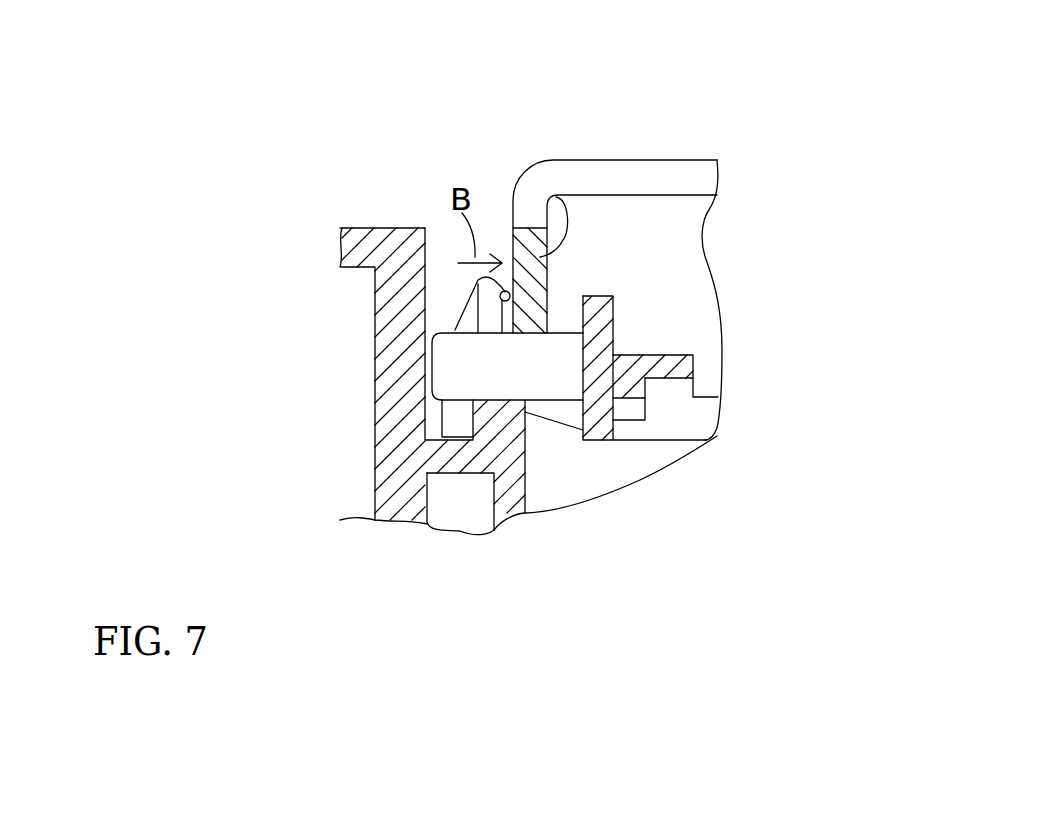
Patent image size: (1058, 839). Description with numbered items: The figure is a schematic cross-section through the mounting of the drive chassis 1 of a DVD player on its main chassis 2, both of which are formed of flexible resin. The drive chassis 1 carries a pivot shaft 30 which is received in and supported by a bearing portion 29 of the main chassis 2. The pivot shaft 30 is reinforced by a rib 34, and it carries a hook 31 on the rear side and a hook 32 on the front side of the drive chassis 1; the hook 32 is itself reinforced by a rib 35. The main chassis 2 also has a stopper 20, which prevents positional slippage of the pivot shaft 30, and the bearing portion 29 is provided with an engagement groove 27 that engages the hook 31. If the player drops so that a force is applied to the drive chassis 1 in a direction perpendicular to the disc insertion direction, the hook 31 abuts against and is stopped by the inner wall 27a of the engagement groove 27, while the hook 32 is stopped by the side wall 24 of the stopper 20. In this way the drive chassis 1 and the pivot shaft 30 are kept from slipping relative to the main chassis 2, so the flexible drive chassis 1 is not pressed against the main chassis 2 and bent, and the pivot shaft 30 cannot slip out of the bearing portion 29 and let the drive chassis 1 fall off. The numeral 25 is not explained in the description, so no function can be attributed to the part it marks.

The drive chassis 1 is at (663, 442).
The main chassis 2 is at (665, 143).
The stopper 20 is at (558, 200).
The side wall 24 is at (510, 294).
The holder member 25 is at (435, 290).
The engagement groove 27 is at (434, 419).
The inner wall 27a is at (473, 427).
The bearing portion 29 is at (492, 412).
The pivot shaft 30 is at (562, 383).
The hook 31 is at (442, 437).
The hook 32 is at (480, 279).
The rib 34 is at (550, 408).
The rib 35 is at (488, 307).